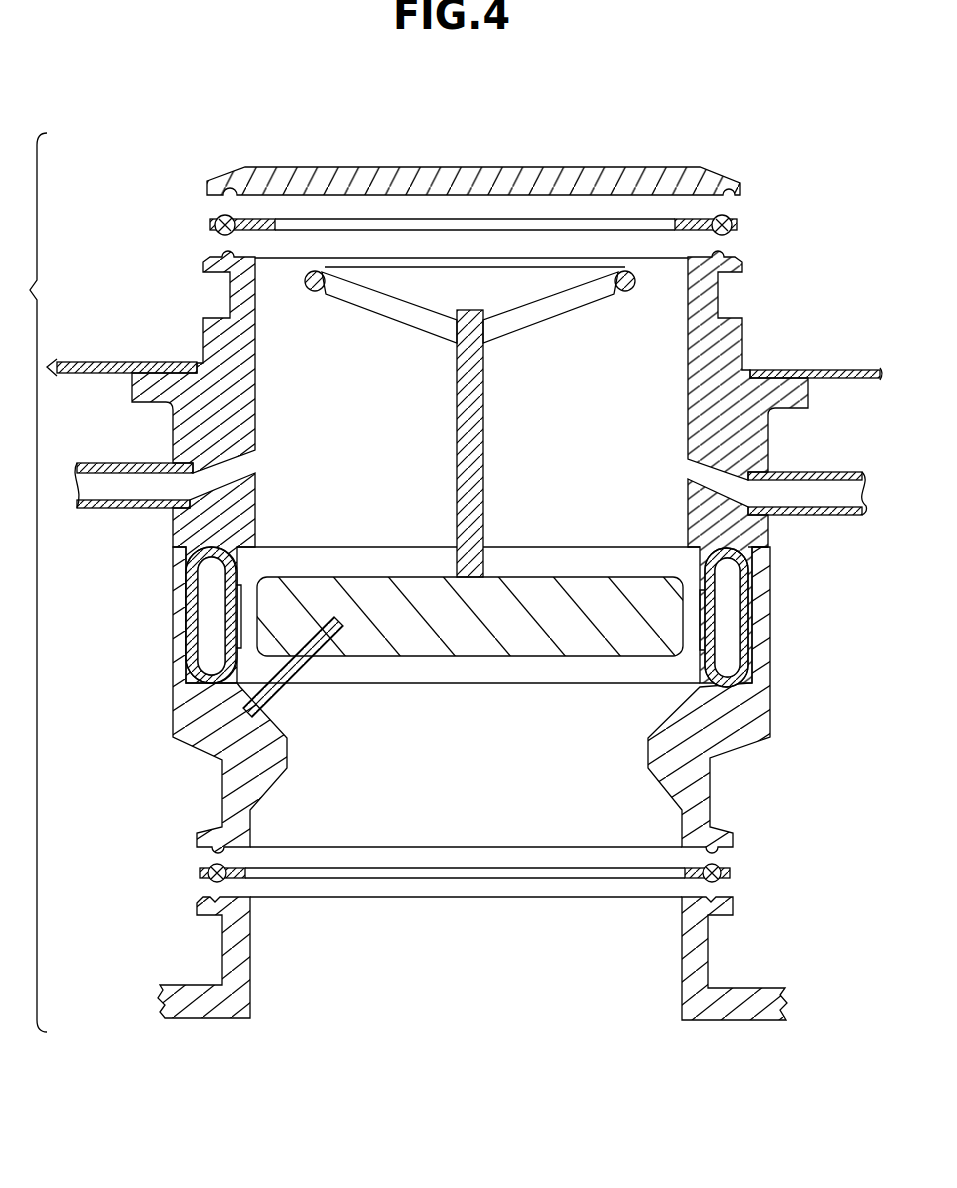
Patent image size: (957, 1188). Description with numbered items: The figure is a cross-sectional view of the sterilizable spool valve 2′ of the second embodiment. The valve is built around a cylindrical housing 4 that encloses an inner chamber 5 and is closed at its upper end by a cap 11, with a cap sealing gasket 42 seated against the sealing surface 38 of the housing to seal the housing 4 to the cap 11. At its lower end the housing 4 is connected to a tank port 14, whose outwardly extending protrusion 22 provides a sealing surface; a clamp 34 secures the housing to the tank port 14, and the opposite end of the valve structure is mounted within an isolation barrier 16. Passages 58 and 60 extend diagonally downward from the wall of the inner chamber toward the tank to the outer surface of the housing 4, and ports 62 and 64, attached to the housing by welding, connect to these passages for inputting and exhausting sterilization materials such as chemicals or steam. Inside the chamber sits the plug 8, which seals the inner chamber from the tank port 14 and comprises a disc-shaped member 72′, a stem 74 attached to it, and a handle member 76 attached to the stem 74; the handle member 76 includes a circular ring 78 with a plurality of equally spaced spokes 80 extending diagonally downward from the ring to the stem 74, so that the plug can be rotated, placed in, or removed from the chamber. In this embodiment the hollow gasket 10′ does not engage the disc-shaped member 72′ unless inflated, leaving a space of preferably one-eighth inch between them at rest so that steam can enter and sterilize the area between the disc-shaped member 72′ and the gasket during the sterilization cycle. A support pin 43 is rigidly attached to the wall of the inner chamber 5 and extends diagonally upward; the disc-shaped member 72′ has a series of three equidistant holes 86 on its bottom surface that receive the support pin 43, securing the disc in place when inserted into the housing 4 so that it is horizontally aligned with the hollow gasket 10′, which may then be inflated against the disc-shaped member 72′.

The sterilizable spool valve 2′ is at (682, 54).
The cylindrical housing 4 is at (172, 665).
The inner chamber 5 is at (491, 467).
The plug 8 is at (540, 446).
The hollow gasket 10′ is at (750, 557).
The cap 11 is at (640, 166).
The tank port 14 is at (222, 945).
The isolation barrier 16 is at (108, 360).
The protrusion 22 is at (810, 368).
The clamp 34 is at (737, 877).
The sealing surface 38 is at (750, 990).
The cap sealing gasket 42 is at (738, 228).
The support pin 43 is at (310, 682).
The passage 58 is at (245, 450).
The passage 60 is at (767, 437).
The port 62 is at (833, 517).
The port 64 is at (117, 465).
The disc-shaped member 72′ is at (570, 577).
The stem 74 is at (487, 385).
The handle member 76 is at (494, 319).
The circular ring 78 is at (638, 274).
The spokes 80 is at (552, 324).
The holes 86 is at (320, 655).